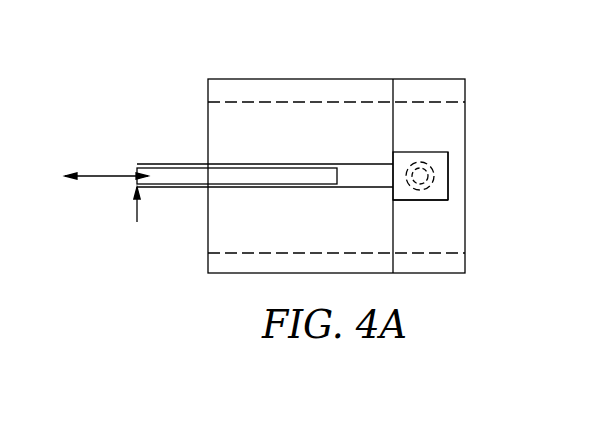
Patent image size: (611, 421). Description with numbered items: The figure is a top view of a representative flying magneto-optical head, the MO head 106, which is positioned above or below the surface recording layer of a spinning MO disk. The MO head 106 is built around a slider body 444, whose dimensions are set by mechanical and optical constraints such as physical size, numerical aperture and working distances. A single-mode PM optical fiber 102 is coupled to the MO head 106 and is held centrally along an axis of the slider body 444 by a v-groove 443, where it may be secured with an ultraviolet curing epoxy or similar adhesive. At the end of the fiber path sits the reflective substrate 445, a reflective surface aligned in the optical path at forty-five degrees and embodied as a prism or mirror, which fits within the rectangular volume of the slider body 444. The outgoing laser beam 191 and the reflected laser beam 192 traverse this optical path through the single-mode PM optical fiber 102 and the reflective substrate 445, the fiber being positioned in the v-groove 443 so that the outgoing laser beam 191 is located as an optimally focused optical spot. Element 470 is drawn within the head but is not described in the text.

The MO head 106 is at (443, 63).
The v-groove 443 is at (265, 114).
The single-mode PM optical fiber 102 is at (236, 222).
The slider body 444 is at (470, 182).
The reflective substrate 445 is at (470, 211).
The lens 470 is at (488, 145).
The reflected laser beam 192 is at (84, 173).
The outgoing laser beam 191 is at (137, 222).